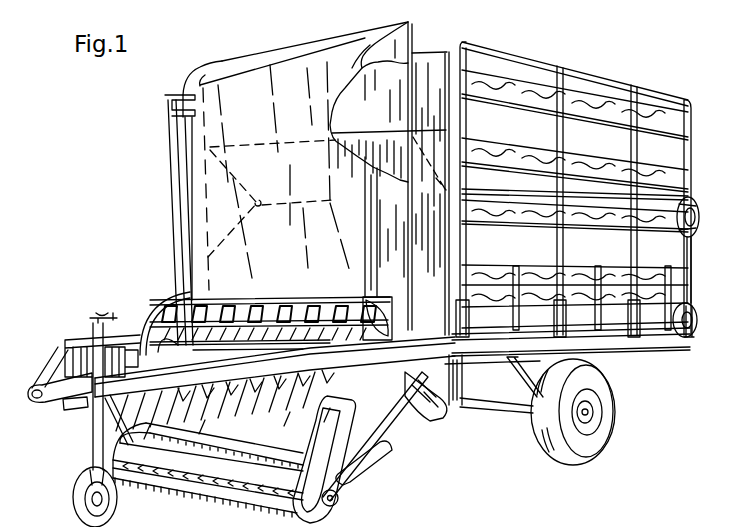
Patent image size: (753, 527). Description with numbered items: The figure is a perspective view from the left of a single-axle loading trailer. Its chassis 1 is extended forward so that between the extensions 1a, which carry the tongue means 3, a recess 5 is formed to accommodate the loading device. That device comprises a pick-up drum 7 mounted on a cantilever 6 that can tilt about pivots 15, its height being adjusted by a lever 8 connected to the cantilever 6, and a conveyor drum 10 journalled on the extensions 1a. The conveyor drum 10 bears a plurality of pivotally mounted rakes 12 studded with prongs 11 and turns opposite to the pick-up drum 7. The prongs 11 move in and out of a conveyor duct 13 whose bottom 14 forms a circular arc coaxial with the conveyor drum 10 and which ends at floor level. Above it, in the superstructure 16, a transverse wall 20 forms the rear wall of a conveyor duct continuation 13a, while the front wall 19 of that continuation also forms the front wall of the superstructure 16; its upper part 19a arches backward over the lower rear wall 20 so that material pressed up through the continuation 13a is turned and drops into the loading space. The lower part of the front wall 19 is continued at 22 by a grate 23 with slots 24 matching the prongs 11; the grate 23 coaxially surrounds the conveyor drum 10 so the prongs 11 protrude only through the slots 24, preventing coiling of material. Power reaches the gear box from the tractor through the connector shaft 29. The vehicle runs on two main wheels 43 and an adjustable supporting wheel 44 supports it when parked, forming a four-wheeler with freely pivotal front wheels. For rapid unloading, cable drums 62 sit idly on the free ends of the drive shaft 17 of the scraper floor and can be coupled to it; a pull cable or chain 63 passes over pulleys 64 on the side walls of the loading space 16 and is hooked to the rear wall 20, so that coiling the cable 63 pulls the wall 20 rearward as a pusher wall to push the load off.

The chassis 1 is at (612, 338).
The extensions 1a is at (435, 348).
The tongue means 3 is at (153, 398).
The recess 5 is at (203, 300).
The cantilever 6 is at (388, 440).
The pick-up drum 7 is at (203, 472).
The lever 8 is at (173, 199).
The conveyor drum 10 is at (370, 337).
The prongs 11 is at (262, 306).
The pivotally mounted rakes 12 is at (237, 304).
The conveyor duct 13 is at (281, 441).
The conveyor duct continuation 13a is at (362, 240).
The bottom 14 is at (427, 423).
The pivots 15 is at (442, 412).
The superstructure 16 is at (635, 92).
The drive shaft 17 is at (687, 338).
The front wall 19 is at (200, 130).
The upper part 19a is at (218, 70).
The transverse wall 20 is at (392, 142).
The continuation of front wall 22 is at (383, 297).
The grate 23 is at (330, 306).
The slots 24 is at (297, 306).
The connector shaft 29 is at (82, 410).
The main wheels 43 is at (610, 408).
The adjustable supporting wheel 44 is at (97, 444).
The cable drums 62 is at (677, 343).
The pull cable or chain 63 is at (686, 262).
The pulleys 64 is at (677, 227).